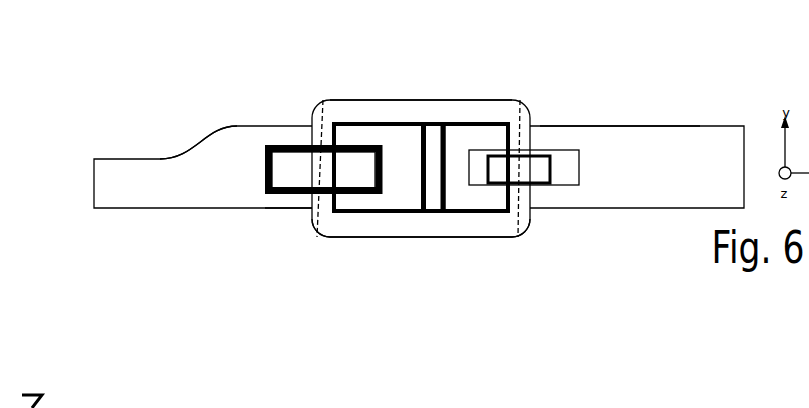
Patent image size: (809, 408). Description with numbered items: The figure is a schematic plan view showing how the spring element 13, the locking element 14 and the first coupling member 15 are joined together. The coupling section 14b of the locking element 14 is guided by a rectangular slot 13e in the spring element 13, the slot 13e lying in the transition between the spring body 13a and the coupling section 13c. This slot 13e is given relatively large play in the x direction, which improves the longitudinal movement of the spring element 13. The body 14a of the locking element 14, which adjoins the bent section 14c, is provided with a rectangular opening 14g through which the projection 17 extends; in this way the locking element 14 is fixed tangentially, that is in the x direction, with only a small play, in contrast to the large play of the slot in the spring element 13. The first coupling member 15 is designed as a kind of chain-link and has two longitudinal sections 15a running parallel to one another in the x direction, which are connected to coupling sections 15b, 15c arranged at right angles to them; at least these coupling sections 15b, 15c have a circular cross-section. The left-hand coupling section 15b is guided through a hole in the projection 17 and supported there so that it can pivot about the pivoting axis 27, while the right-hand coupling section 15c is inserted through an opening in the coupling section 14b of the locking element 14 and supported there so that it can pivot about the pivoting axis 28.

The spring element 13 is at (703, 112).
The spring body 13a is at (577, 138).
The coupling section 13c is at (455, 178).
The slot 13e is at (562, 178).
The locking element 14 is at (116, 214).
The body 14a is at (299, 203).
The coupling section 14b is at (535, 168).
The bent section of first strip 14c is at (142, 173).
The rectangular opening 14g is at (290, 157).
The first coupling member 15 is at (452, 97).
The longitudinal sections 15a is at (410, 107).
The coupling section 15b is at (316, 238).
The coupling section 15c is at (519, 240).
The projection 17 is at (303, 163).
The pivoting axis 27 is at (323, 100).
The pivoting axis 28 is at (520, 100).